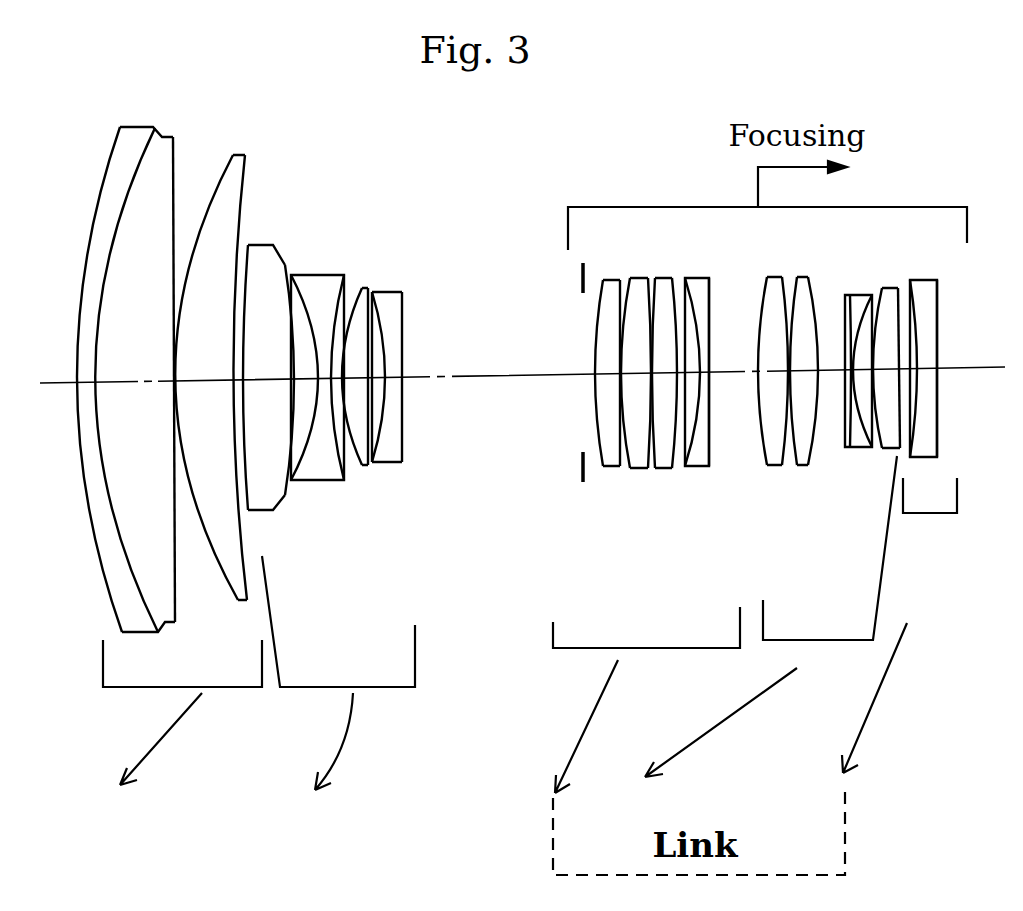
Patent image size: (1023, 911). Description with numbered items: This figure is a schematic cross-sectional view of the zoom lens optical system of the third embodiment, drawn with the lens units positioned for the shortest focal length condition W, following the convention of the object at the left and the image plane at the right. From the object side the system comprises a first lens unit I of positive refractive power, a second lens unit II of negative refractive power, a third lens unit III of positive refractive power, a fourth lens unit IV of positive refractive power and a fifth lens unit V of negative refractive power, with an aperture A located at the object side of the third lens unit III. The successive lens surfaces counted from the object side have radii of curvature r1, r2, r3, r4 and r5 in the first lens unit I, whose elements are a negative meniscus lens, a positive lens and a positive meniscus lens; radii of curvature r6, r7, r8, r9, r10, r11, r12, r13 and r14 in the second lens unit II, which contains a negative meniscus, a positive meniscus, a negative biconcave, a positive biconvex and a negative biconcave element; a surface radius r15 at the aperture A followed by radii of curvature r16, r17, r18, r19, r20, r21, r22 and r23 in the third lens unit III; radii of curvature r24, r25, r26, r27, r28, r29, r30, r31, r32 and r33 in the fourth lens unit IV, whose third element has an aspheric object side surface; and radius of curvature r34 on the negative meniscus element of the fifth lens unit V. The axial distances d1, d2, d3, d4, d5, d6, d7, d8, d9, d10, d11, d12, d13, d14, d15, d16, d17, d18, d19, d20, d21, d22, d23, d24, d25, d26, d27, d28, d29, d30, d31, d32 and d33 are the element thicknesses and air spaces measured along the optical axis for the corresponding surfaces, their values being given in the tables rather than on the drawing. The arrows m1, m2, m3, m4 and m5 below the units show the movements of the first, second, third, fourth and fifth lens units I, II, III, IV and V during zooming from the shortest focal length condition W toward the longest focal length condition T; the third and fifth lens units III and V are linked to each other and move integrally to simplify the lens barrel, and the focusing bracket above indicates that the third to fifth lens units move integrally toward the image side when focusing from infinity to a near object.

The radius of curvature r1 is at (107, 163).
The radius of curvature r2 is at (143, 163).
The radius of curvature r3 is at (177, 152).
The radius of curvature r4 is at (225, 168).
The radius of curvature r5 is at (246, 175).
The radius of curvature r6 is at (250, 272).
The radius of curvature r7 is at (283, 262).
The radius of curvature r8 is at (291, 285).
The radius of curvature r9 is at (330, 290).
The radius of curvature r10 is at (352, 300).
The radius of curvature r11 is at (366, 295).
The radius of curvature r12 is at (373, 300).
The radius of curvature r13 is at (385, 298).
The radius of curvature r14 is at (403, 300).
The radius of curvature r15 is at (583, 279).
The radius of curvature r16 is at (600, 280).
The radius of curvature r17 is at (620, 280).
The radius of curvature r18 is at (631, 278).
The radius of curvature r19 is at (649, 280).
The radius of curvature r20 is at (658, 279).
The radius of curvature r21 is at (676, 280).
The radius of curvature r22 is at (690, 279).
The radius of curvature r23 is at (709, 280).
The radius of curvature r24 is at (768, 277).
The radius of curvature r25 is at (782, 277).
The radius of curvature r26 is at (798, 277).
The radius of curvature r27 is at (809, 277).
The radius of curvature r28 is at (848, 295).
The radius of curvature r29 is at (868, 295).
The radius of curvature r30 is at (882, 288).
The radius of curvature r31 is at (899, 288).
The radius of curvature r32 is at (915, 280).
The radius of curvature r33 is at (937, 280).
The radius of curvature r34 is at (945, 295).
The axial distance d1 is at (87, 372).
The axial distance d2 is at (127, 365).
The axial distance d3 is at (182, 508).
The axial distance d4 is at (198, 365).
The axial distance d5 is at (242, 510).
The axial distance d6 is at (240, 403).
The axial distance d7 is at (265, 365).
The axial distance d8 is at (304, 388).
The axial distance d9 is at (325, 400).
The axial distance d10 is at (338, 402).
The axial distance d11 is at (355, 387).
The axial distance d12 is at (380, 386).
The axial distance d13 is at (396, 385).
The axial distance d14 is at (470, 365).
The axial distance d15 is at (564, 360).
The axial distance d16 is at (607, 380).
The axial distance d17 is at (627, 467).
The axial distance d18 is at (637, 365).
The axial distance d19 is at (653, 457).
The axial distance d20 is at (667, 383).
The axial distance d21 is at (685, 383).
The axial distance d22 is at (703, 382).
The axial distance d23 is at (733, 358).
The axial distance d24 is at (752, 384).
The axial distance d25 is at (782, 468).
The axial distance d26 is at (803, 380).
The axial distance d27 is at (830, 378).
The axial distance d28 is at (851, 382).
The axial distance d29 is at (872, 380).
The axial distance d30 is at (852, 590).
The axial distance d31 is at (892, 382).
The axial distance d32 is at (912, 385).
The axial distance d33 is at (922, 383).
The aperture A is at (582, 468).
The first lens unit I is at (182, 682).
The second lens unit II is at (338, 640).
The third lens unit III is at (646, 645).
The fourth lens unit IV is at (830, 568).
The fifth lens unit V is at (930, 518).
The arrow m1 is at (162, 740).
The arrow m2 is at (343, 743).
The arrow m3 is at (598, 698).
The arrow m4 is at (743, 707).
The arrow m5 is at (865, 725).
The shortest focal length condition W is at (966, 619).
The telephoto end T is at (962, 776).